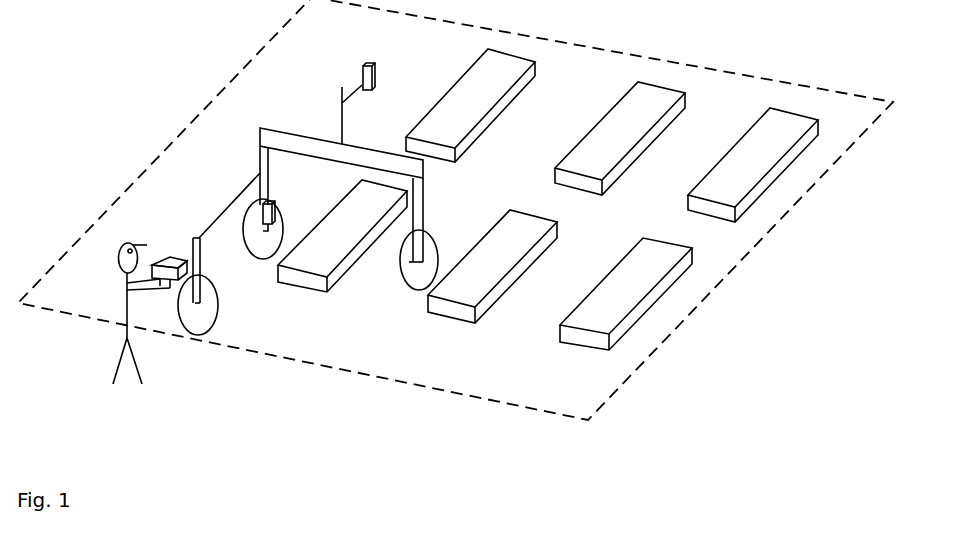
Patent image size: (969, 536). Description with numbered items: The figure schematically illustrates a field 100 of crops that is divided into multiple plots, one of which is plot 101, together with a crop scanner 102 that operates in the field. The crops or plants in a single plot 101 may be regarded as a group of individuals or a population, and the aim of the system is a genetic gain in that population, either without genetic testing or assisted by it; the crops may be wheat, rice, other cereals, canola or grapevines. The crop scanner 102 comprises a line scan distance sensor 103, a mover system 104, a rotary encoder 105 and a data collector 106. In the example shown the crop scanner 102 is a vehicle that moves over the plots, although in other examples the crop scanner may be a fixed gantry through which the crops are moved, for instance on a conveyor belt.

The field 100 is at (740, 258).
The plot 101 is at (348, 251).
The crop scanner 102 is at (293, 114).
The line scan distance sensor 103 is at (368, 61).
The mover system 104 is at (258, 146).
The rotary encoder 105 is at (274, 207).
The data collector 106 is at (160, 256).